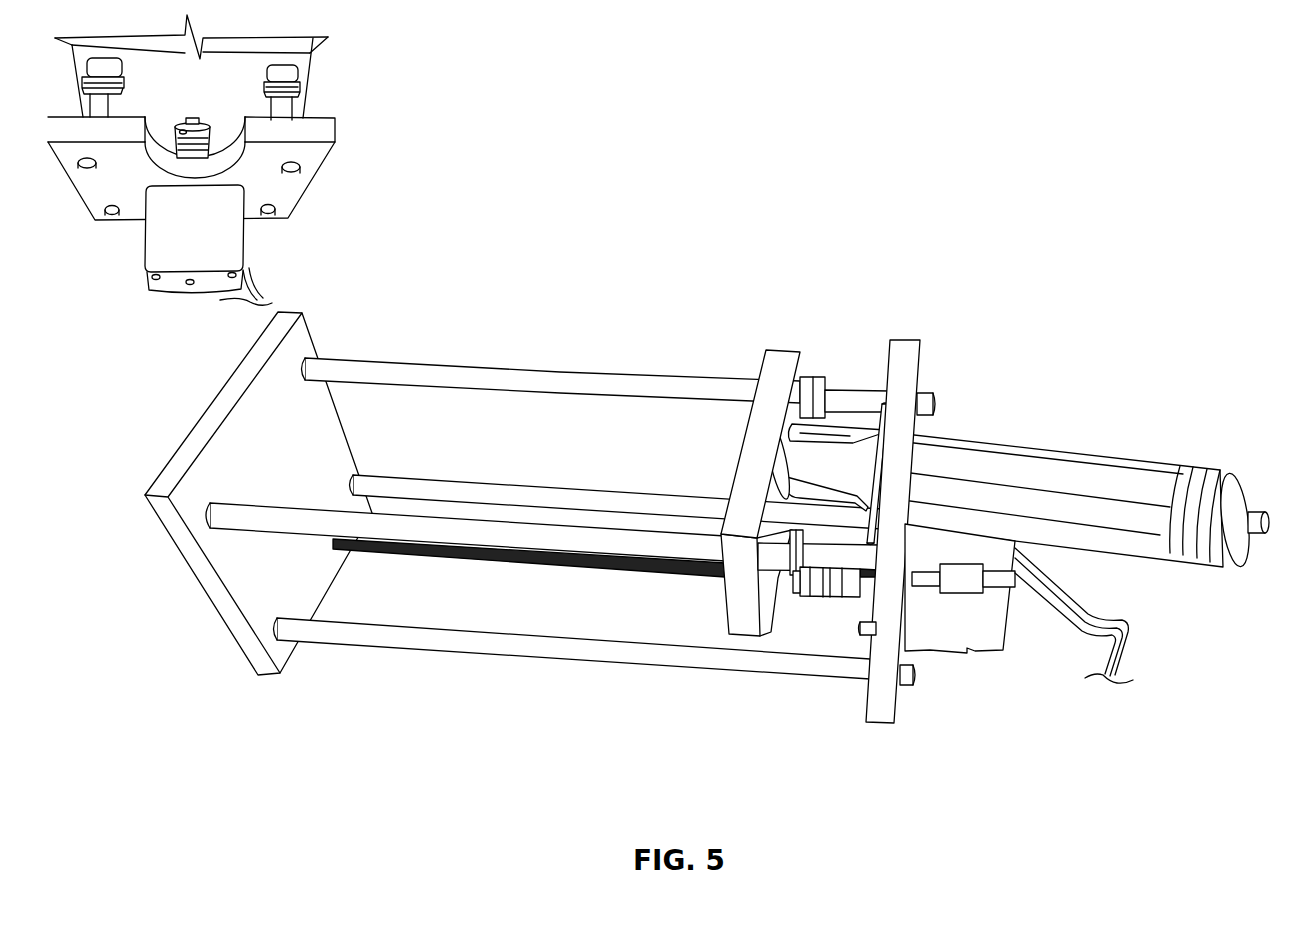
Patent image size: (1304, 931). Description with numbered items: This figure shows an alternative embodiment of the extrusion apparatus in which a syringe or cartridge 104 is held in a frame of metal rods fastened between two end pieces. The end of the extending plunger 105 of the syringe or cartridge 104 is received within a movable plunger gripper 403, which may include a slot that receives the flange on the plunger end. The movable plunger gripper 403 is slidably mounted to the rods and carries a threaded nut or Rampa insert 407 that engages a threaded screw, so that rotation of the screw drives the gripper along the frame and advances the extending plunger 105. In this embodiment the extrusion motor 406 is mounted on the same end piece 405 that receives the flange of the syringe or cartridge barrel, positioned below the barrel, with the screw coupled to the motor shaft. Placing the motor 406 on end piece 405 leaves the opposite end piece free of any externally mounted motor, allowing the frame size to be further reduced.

The syringe or cartridge 104 is at (1002, 467).
The extending plunger 105 is at (828, 457).
The movable plunger gripper 403 is at (783, 352).
The end piece 405 is at (905, 352).
The extrusion motor 406 is at (967, 625).
The threaded nut or Rampa insert 407 is at (805, 580).